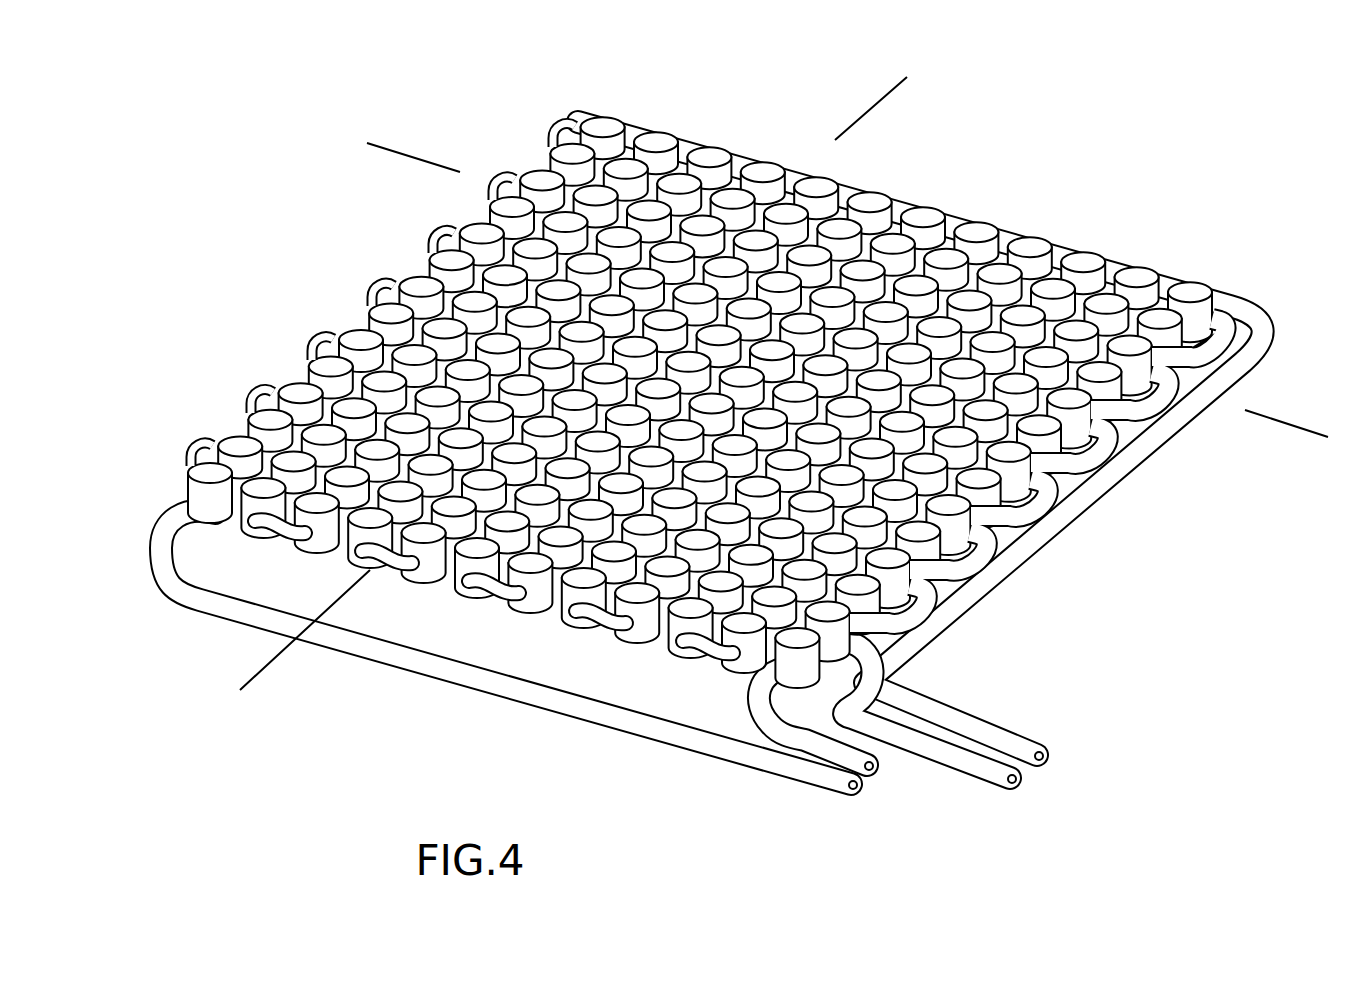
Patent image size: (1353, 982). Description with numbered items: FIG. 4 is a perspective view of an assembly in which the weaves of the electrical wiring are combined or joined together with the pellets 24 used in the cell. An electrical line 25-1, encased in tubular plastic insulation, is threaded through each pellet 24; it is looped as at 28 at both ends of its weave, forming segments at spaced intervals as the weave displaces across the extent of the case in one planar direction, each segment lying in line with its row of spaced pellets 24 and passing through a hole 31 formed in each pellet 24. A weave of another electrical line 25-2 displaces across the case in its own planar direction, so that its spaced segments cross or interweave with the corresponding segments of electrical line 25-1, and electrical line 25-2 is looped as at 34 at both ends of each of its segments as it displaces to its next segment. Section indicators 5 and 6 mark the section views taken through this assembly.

The pellet 24 is at (816, 187).
The loop 28 is at (658, 140).
The hole 31 is at (562, 622).
The loop 34 is at (570, 127).
The electrical line 25-1 is at (826, 748).
The electrical line 25-2 is at (990, 740).
The section line 5- 5 is at (864, 120).
The section line 6- 6 is at (391, 157).